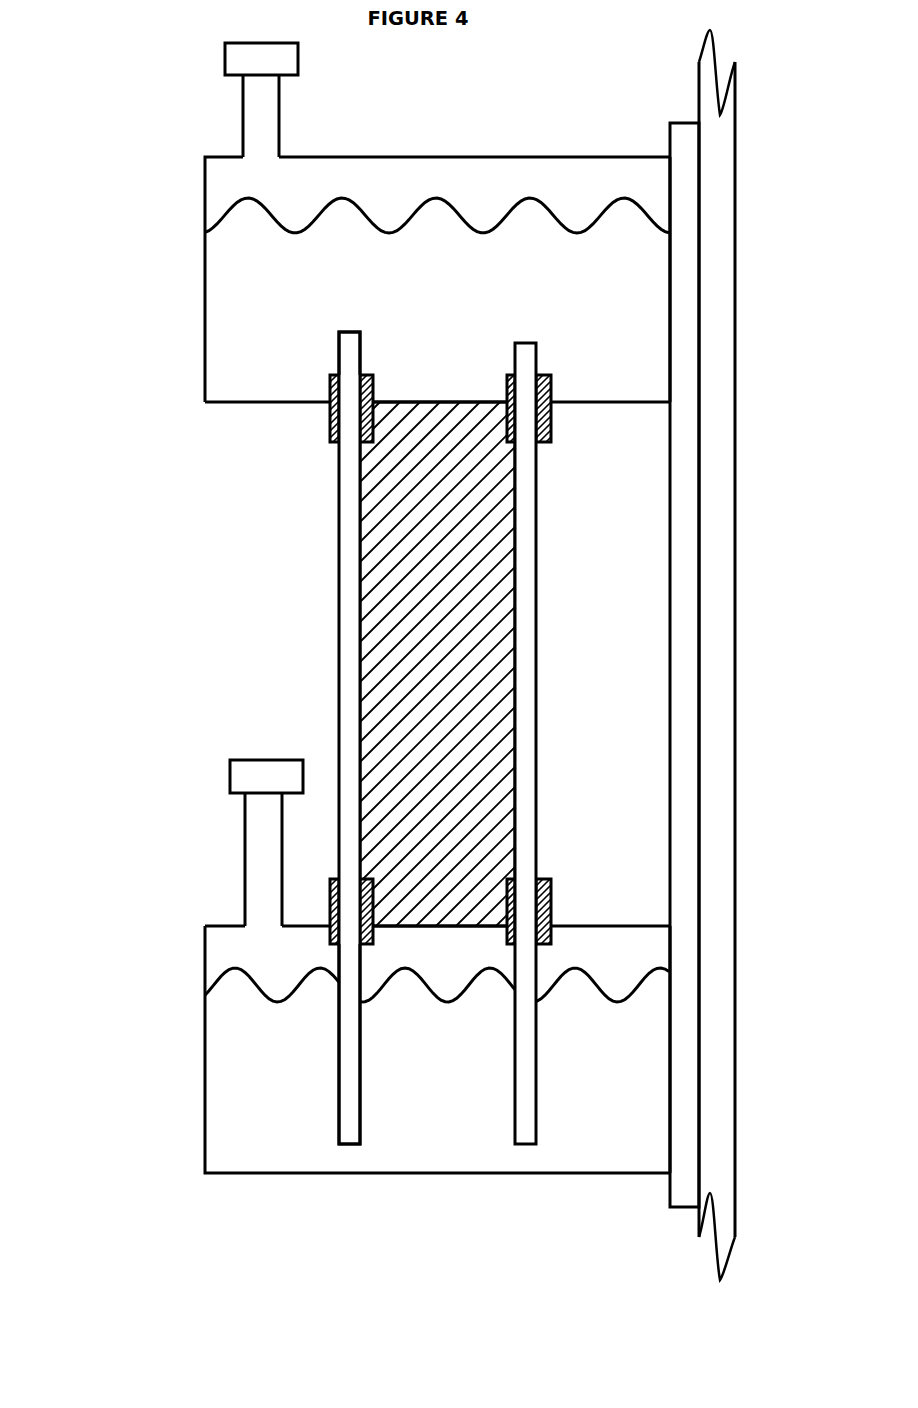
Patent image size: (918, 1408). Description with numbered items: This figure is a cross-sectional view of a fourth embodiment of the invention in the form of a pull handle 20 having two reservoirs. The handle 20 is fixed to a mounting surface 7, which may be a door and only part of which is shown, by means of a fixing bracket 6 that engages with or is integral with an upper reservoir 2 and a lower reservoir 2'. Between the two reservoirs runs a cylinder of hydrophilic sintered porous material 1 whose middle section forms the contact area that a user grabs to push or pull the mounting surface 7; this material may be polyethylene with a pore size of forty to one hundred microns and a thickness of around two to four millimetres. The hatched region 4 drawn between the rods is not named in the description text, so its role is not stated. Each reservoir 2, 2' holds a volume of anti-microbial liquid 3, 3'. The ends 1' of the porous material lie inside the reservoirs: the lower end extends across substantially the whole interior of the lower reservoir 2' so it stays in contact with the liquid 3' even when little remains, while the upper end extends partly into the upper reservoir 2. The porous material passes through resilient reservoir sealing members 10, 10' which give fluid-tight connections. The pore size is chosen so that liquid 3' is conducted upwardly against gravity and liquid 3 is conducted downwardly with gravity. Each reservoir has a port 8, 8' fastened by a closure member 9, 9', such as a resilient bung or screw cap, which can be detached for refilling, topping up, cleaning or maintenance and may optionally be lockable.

The hydrophilic sintered porous material 1 is at (437, 738).
The end of hydrophilic sintered porous material 1' is at (307, 814).
The upper reservoir 2 is at (400, 279).
The lower reservoir 2' is at (400, 1049).
The anti-microbial liquid 3 is at (400, 284).
The anti-microbial liquid 3' is at (398, 1053).
The membrane 4 is at (435, 603).
The fixing bracket 6 is at (685, 173).
The mounting surface 7 is at (719, 163).
The port 8 is at (205, 116).
The port 8' is at (206, 859).
The closure member 9 is at (214, 55).
The closure member 9' is at (216, 738).
The reservoir sealing member 10 is at (476, 435).
The reservoir sealing member 10' is at (478, 844).
The pull handle 20 is at (431, 663).